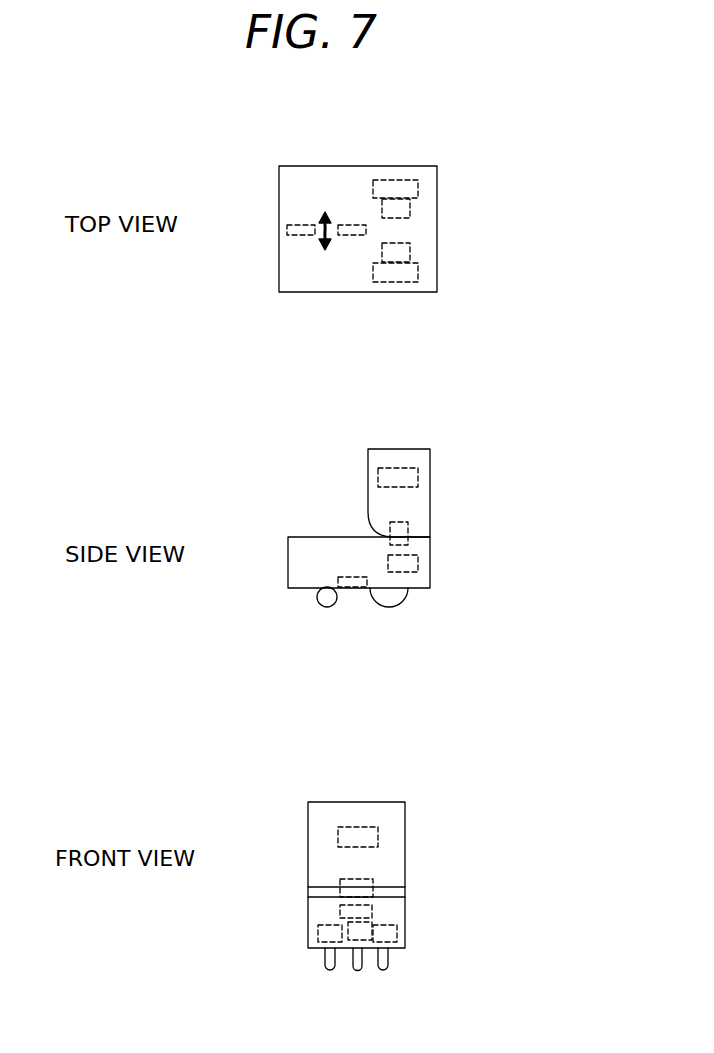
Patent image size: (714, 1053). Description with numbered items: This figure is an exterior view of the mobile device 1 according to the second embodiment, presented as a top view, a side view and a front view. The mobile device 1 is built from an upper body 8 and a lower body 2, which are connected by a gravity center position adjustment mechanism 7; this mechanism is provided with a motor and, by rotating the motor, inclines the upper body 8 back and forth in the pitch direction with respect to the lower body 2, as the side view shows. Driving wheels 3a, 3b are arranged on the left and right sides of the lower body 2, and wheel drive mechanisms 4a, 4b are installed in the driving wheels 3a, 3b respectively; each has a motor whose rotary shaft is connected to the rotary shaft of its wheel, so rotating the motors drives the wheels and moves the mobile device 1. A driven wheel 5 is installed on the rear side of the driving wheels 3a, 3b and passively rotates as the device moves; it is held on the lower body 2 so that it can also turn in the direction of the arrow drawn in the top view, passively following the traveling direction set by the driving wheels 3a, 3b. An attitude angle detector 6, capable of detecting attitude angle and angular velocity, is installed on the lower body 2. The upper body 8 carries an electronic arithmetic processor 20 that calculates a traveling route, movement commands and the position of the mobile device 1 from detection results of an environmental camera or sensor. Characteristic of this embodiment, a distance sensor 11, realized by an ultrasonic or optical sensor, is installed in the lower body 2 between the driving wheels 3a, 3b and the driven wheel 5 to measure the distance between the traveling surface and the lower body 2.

The mobile device 1 is at (269, 128).
The lower body 2 is at (343, 166).
The driving wheel 3a is at (418, 184).
The driving wheel 3b is at (418, 280).
The wheel drive mechanism 4a is at (410, 212).
The wheel drive mechanism 4b is at (410, 254).
The driven wheel 5 is at (287, 231).
The attitude angle detector 6 is at (418, 564).
The gravity center position adjustment mechanism 7 is at (405, 537).
The upper body 8 is at (368, 462).
The distance sensor 11 is at (347, 237).
The electronic arithmetic processor 20 is at (418, 472).